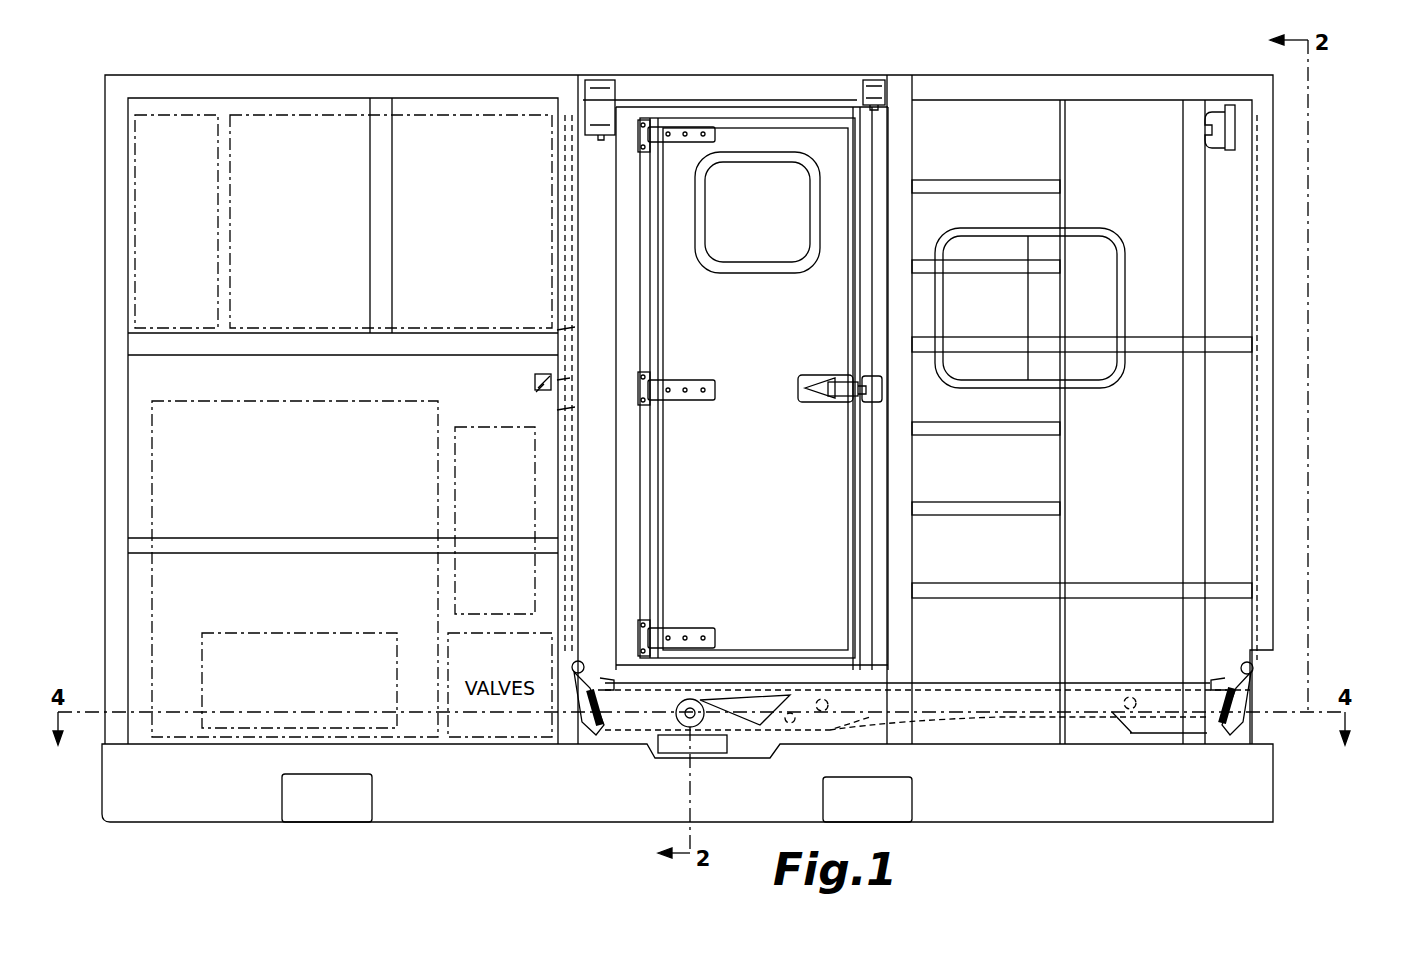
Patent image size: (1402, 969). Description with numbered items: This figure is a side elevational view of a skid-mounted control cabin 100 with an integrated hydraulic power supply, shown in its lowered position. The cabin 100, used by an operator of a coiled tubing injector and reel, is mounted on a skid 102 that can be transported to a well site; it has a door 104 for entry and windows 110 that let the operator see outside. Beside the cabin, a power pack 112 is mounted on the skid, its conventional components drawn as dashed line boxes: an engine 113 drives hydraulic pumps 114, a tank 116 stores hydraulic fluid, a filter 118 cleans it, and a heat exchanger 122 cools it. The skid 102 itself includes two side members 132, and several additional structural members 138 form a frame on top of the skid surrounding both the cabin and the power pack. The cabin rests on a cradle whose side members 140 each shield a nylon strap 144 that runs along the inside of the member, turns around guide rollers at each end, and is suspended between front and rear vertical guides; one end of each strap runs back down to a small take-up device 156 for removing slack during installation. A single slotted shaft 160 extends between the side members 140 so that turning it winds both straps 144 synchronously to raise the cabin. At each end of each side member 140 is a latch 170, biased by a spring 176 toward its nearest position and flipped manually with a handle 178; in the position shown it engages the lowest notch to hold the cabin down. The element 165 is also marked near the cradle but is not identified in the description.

The control cabin 100 is at (1128, 125).
The skid 102 is at (1271, 834).
The door 104 is at (793, 135).
The windows 110 is at (1100, 245).
The power pack 112 is at (370, 72).
The engine 113 is at (315, 405).
The hydraulic pumps 114 is at (300, 630).
The tank 116 is at (488, 110).
The filter 118 is at (462, 425).
The heat exchanger 122 is at (172, 110).
The side members 132 is at (1017, 812).
The structural members 138 is at (282, 90).
The side members 140 is at (860, 730).
The straps 144 is at (1255, 342).
The take-up device 156 is at (538, 390).
The shaft 160 is at (700, 727).
The lever 165 is at (745, 722).
The latch 170 is at (582, 698).
The spring 176 is at (610, 732).
The handle 178 is at (580, 660).